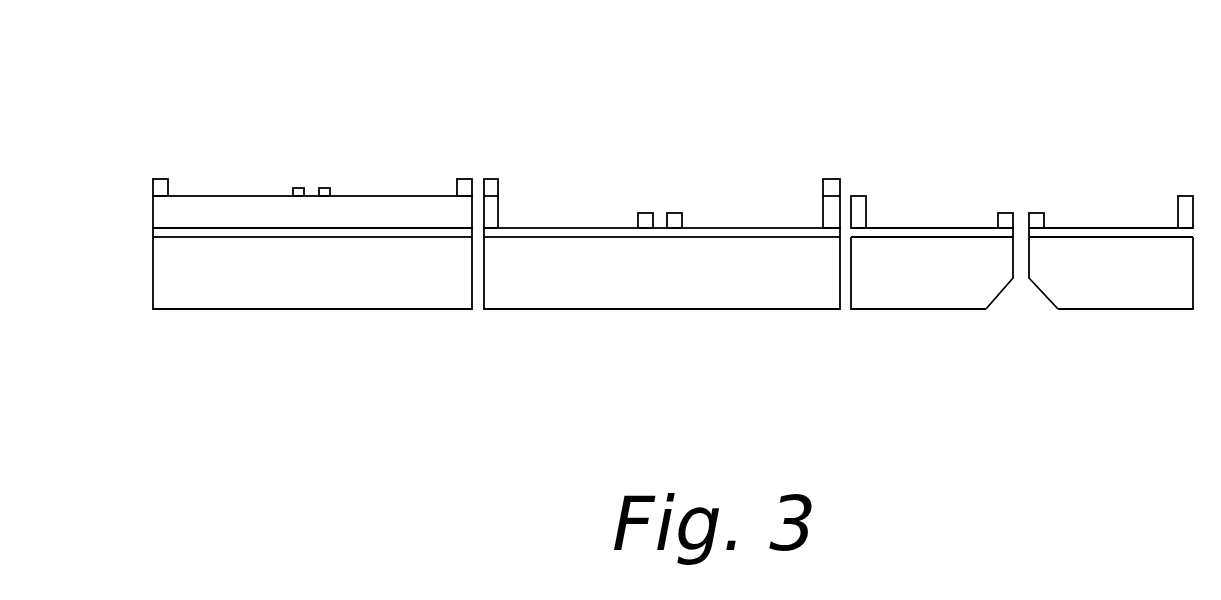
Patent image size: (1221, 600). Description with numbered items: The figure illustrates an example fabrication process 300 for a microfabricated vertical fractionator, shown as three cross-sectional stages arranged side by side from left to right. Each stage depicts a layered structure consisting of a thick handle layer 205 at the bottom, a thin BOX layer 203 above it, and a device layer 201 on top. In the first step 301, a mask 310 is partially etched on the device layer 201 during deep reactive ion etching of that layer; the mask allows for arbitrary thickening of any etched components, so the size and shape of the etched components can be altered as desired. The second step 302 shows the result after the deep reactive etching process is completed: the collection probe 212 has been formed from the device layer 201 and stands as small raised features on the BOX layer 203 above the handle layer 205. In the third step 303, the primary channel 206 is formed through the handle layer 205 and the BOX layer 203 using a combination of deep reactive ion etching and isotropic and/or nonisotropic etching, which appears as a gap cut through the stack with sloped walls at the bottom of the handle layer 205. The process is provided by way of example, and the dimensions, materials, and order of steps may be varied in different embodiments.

The fabrication process 300 is at (240, 47).
The first step 301 is at (300, 362).
The second step 302 is at (659, 362).
The third step 303 is at (1008, 362).
The device layer 201 is at (160, 211).
The BOX layer 203 is at (160, 232).
The handle layer 205 is at (281, 285).
The mask 310 is at (327, 187).
The collection probe 212 is at (673, 211).
The primary channel 206 is at (1021, 229).